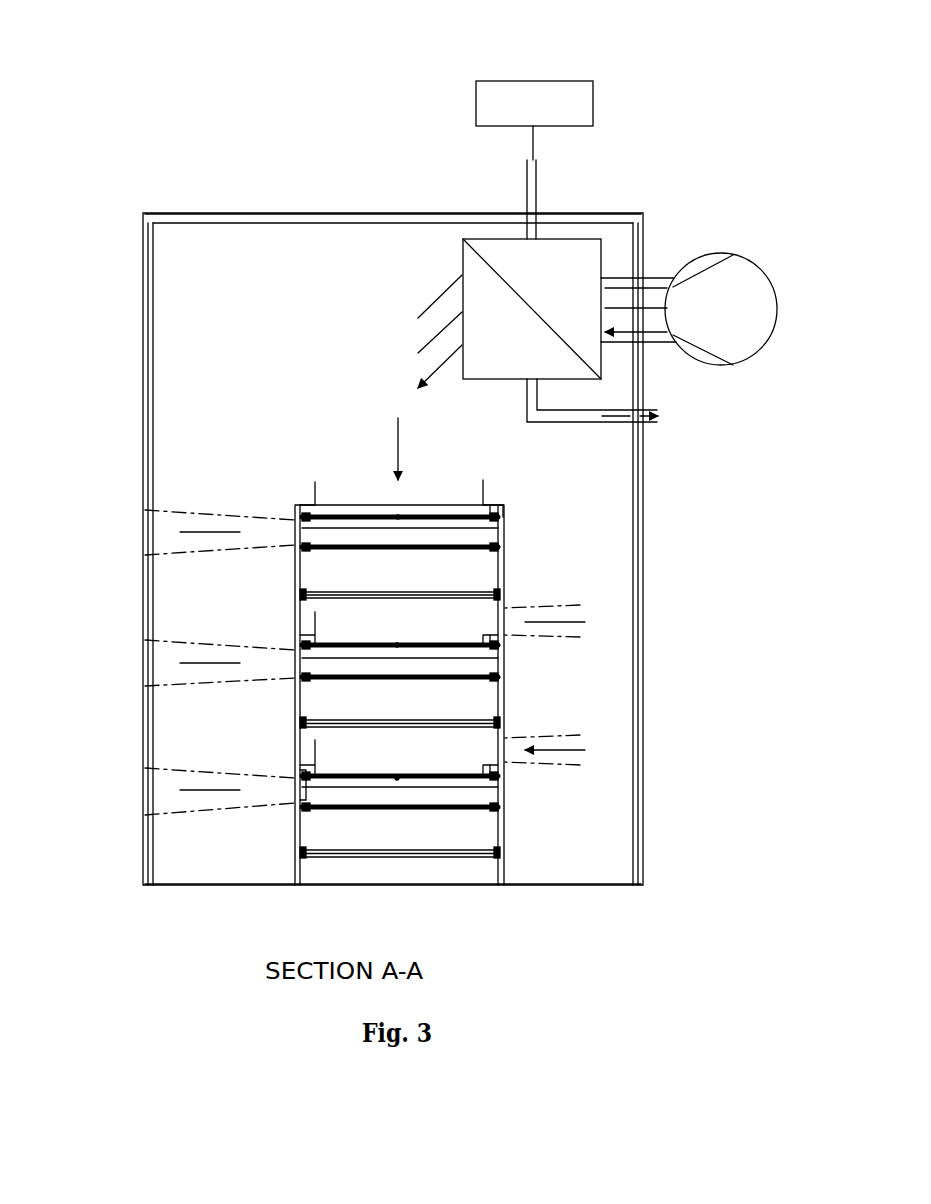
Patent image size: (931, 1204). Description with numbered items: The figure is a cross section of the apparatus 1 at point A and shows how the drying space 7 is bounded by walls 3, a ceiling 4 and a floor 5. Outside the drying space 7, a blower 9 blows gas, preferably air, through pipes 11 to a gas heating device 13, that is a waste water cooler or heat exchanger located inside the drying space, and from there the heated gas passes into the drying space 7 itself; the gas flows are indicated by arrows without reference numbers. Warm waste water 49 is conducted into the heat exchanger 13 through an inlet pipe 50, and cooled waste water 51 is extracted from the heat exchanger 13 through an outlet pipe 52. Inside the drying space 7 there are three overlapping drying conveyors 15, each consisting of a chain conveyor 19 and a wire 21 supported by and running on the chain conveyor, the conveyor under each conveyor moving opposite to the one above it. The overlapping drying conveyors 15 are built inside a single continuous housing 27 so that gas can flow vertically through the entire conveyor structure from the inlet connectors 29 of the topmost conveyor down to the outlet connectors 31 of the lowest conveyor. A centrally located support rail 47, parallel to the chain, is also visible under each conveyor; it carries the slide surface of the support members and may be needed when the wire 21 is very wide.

The apparatus 1 is at (638, 70).
The walls 3 is at (143, 355).
The ceiling 4 is at (232, 213).
The floor 5 is at (610, 885).
The drying space 7 is at (237, 314).
The blower 9 is at (722, 253).
The pipes 11 is at (655, 275).
The gas heating device (waste water cooler) 13 is at (478, 240).
The drying conveyors 15 is at (592, 567).
The chain conveyor 19 is at (483, 540).
The wire 21 is at (347, 515).
The housing 27 is at (297, 822).
The inlet connectors 29 is at (313, 493).
The outlet connectors 31 is at (295, 793).
The support rail 47 is at (397, 645).
The warm waste water 49 is at (533, 160).
The inlet pipe 50 is at (538, 205).
The cooled waste water 51 is at (640, 425).
The outlet pipe 52 is at (610, 410).